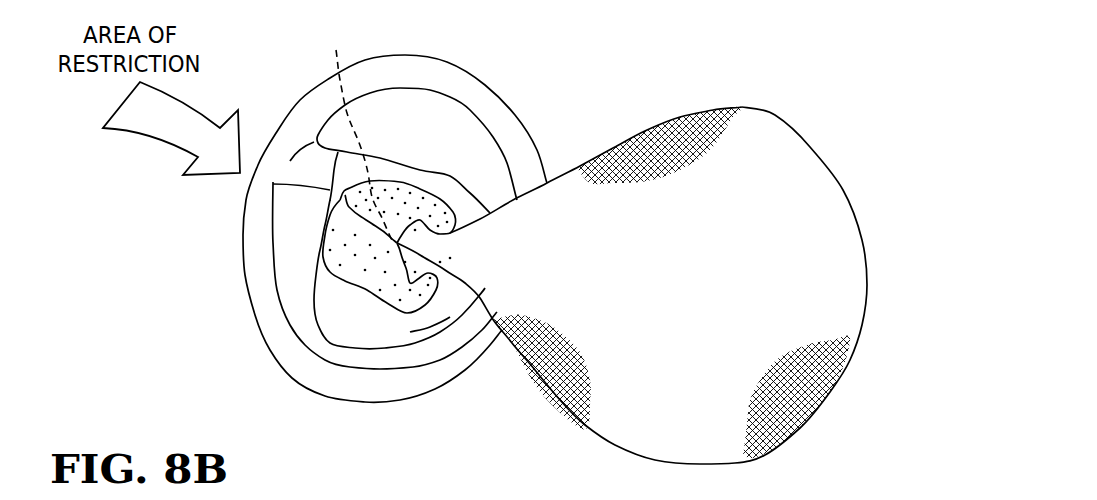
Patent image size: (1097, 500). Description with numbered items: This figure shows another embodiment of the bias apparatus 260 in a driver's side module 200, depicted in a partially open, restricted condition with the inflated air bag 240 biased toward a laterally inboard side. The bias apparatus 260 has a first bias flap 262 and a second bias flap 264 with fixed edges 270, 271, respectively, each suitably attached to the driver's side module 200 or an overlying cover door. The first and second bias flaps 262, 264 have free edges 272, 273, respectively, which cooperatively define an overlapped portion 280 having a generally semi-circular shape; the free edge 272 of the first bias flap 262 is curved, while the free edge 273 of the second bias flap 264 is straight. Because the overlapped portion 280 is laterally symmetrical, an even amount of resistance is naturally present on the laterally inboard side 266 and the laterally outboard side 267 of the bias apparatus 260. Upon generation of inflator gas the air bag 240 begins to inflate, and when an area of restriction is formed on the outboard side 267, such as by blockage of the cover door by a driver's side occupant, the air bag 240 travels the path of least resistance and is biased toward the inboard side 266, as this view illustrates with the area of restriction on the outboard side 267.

The driver's side module 200 is at (446, 196).
The air bag 240 is at (795, 155).
The bias apparatus 260 is at (322, 243).
The first bias flap 262 is at (414, 189).
The second bias flap 264 is at (362, 287).
The laterally inboard side 266 is at (430, 293).
The laterally outboard side 267 is at (323, 258).
The fixed edge of first flap 270 is at (392, 183).
The fixed edge of second flap 271 is at (379, 300).
The free edge of first flap 272 is at (358, 293).
The free edge of second flap 273 is at (353, 133).
The overlapped portion 280 is at (377, 235).